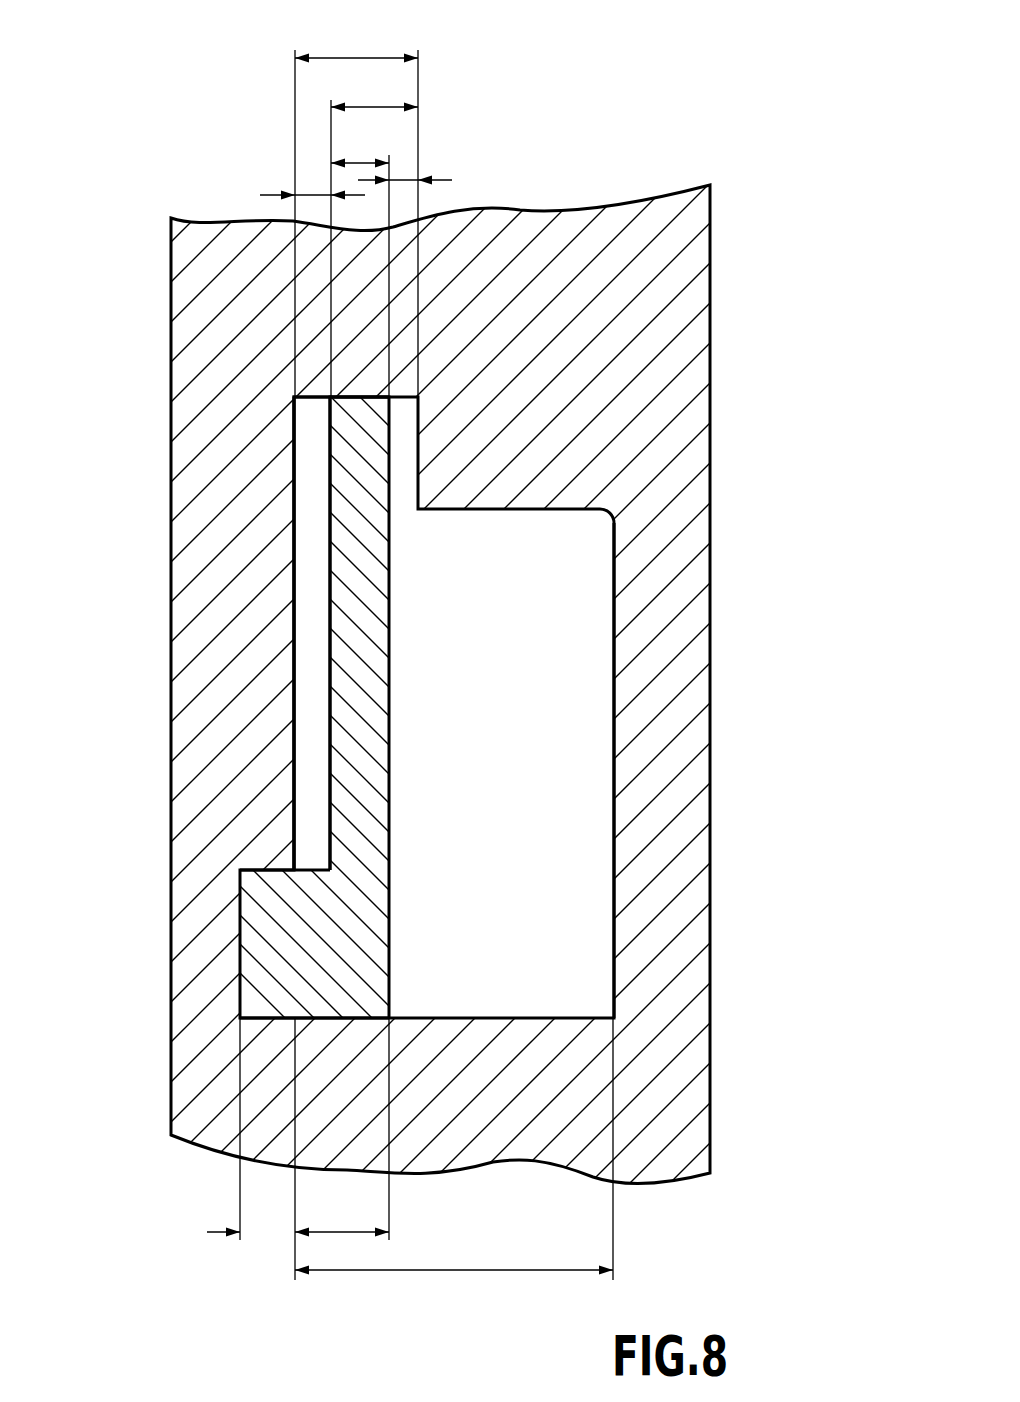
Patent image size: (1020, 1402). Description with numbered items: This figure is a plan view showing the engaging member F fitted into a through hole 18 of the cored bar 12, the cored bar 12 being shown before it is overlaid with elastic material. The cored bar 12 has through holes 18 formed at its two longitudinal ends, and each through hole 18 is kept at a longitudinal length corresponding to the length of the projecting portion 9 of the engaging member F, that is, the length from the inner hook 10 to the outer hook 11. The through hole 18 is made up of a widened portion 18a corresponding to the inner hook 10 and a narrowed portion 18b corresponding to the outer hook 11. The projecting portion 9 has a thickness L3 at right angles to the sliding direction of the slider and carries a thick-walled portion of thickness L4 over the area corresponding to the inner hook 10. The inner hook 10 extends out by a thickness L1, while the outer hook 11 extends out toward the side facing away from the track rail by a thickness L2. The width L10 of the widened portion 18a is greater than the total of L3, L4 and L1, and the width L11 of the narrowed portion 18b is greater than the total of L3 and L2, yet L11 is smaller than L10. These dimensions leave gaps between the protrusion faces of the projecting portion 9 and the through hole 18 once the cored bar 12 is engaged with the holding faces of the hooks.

The projecting portion 9 is at (370, 741).
The inner hook 10 is at (253, 947).
The outer hook 11 is at (347, 425).
The cored bar 12 is at (698, 289).
The through hole 18 is at (622, 604).
The widened portion 18a is at (613, 943).
The narrowed portion 18b is at (296, 533).
The engaging member F is at (327, 645).
The thickness of inner hook L1 is at (260, 1234).
The thickness of outer hook L2 is at (408, 178).
The thickness of projecting portion L3 is at (362, 162).
The thickness of thick-walled portion L4 is at (315, 193).
The width of widened portion L10 is at (440, 1272).
The width of narrowed portion L11 is at (360, 57).